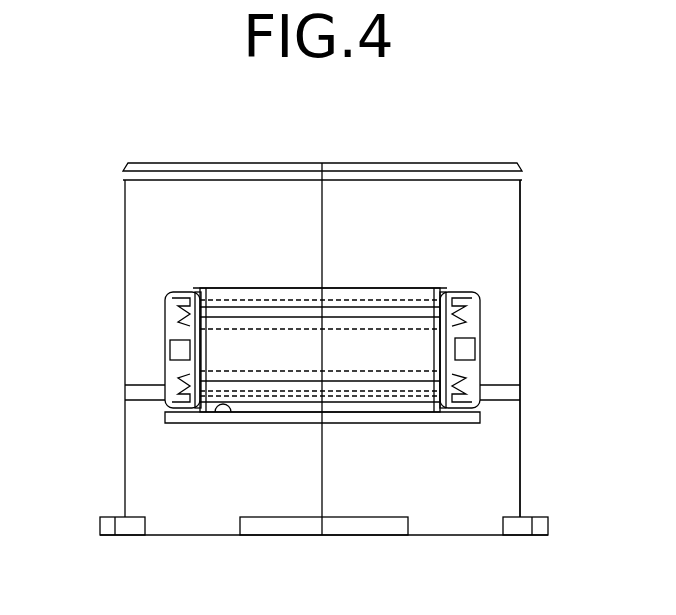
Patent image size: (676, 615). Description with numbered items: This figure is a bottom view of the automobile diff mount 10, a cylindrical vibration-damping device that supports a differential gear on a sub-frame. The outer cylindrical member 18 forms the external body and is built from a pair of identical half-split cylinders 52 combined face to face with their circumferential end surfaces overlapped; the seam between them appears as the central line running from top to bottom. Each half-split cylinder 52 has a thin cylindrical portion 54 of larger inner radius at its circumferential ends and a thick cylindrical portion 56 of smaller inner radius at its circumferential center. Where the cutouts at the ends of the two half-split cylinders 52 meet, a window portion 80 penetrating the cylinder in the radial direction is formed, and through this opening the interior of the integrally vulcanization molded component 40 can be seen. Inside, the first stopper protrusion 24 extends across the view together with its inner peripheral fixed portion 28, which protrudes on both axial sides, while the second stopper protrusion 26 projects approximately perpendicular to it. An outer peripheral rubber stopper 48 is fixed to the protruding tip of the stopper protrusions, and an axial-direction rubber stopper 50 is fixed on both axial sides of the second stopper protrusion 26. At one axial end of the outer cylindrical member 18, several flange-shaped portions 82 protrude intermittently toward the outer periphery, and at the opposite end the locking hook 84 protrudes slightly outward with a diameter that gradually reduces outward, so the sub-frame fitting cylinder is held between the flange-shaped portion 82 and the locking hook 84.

The diff mount 10 is at (547, 126).
The outer cylindrical member 18 is at (529, 470).
The first stopper protrusion 24 is at (360, 350).
The second stopper protrusion 26 is at (165, 370).
The inner peripheral fixed portion 28 is at (290, 290).
The integrally vulcanization molded component 40 is at (197, 292).
The outer peripheral rubber stopper 48 is at (392, 388).
The axial-direction rubber stopper 50 is at (193, 300).
The half-split cylinder 52 is at (503, 224).
The thin cylindrical portion 54 is at (288, 196).
The thick cylindrical portion 56 is at (146, 342).
The window portion 80 is at (218, 412).
The flange-shaped portion 82 is at (110, 530).
The locking hook 84 is at (162, 170).